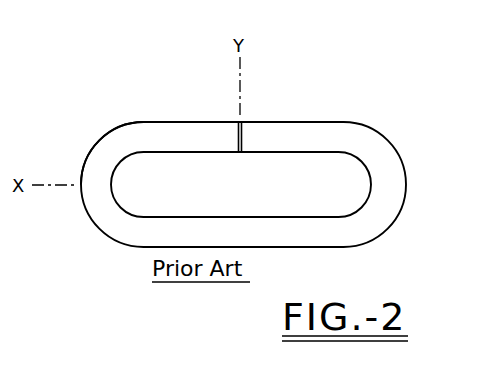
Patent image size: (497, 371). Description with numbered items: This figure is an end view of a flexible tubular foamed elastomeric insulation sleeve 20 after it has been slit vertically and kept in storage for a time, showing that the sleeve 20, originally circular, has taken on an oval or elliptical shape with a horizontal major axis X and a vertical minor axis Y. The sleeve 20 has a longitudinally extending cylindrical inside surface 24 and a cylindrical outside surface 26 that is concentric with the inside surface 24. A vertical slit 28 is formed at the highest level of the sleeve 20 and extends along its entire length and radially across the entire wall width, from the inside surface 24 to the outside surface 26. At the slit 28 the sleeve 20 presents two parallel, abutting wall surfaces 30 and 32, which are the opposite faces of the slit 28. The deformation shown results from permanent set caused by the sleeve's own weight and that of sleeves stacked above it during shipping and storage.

The sleeve 20 is at (364, 118).
The inside surface 24 is at (122, 207).
The outside surface 26 is at (108, 133).
The vertical slit 28 is at (240, 122).
The abutting wall surface 30 is at (238, 134).
The abutting wall surface 32 is at (243, 146).